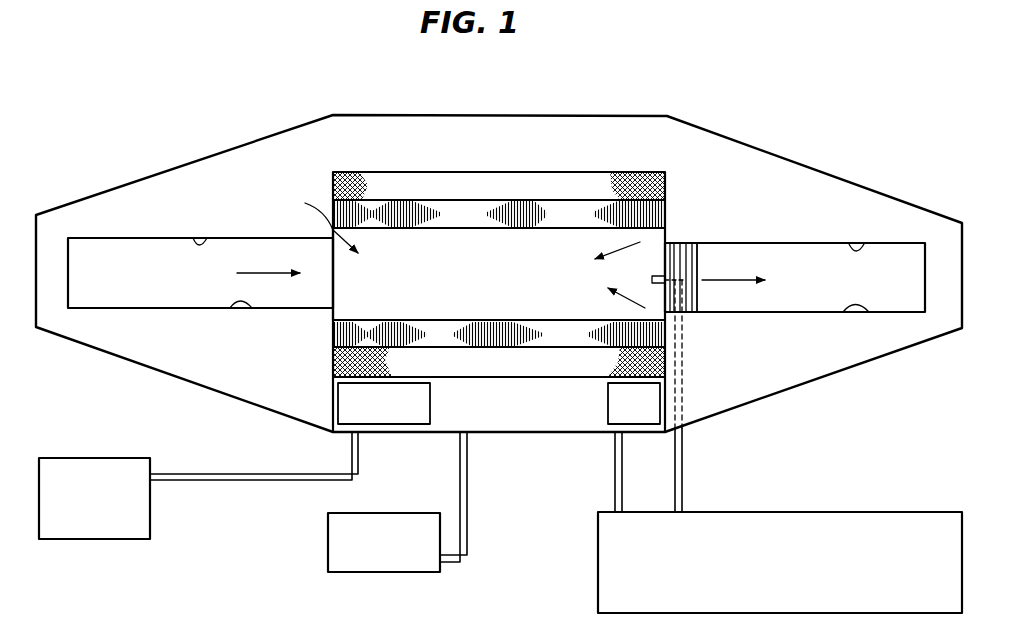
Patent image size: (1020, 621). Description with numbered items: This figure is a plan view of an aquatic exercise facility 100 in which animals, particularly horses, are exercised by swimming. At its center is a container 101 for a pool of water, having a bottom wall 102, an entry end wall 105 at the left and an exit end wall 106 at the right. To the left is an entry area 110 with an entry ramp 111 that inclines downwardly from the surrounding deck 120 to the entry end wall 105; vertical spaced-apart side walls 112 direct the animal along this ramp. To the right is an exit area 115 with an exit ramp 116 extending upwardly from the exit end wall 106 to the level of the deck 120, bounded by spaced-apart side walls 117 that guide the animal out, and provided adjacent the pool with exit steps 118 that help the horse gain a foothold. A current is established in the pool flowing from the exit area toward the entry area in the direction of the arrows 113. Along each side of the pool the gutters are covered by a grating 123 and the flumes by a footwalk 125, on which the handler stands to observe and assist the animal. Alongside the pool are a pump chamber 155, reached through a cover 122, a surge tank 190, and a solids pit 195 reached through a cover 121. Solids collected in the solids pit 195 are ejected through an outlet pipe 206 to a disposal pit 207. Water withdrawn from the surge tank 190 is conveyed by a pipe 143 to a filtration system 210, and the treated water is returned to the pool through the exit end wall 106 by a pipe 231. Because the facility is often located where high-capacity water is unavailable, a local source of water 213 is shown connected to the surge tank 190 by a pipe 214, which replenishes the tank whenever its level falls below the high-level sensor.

The aquatic exercise facility 100 is at (285, 56).
The container 101 is at (319, 217).
The bottom wall 102 is at (548, 278).
The entry end wall 105 is at (337, 282).
The exit end wall 106 is at (668, 247).
The entry area 110 is at (170, 250).
The entry ramp 111 is at (218, 294).
The side walls 112 is at (208, 239).
The arrows 113 is at (626, 247).
The exit area 115 is at (763, 258).
The exit ramp 116 is at (908, 296).
The side walls 117 is at (864, 245).
The exit steps 118 is at (701, 261).
The deck 120 is at (710, 143).
The cover 121 is at (392, 410).
The cover 122 is at (638, 412).
The grating 123 is at (437, 222).
The footwalk 125 is at (427, 182).
The pipe 143 is at (614, 478).
The pump chamber 155 is at (604, 414).
The surge tank 190 is at (525, 424).
The solids pit 195 is at (333, 412).
The outlet pipe 206 is at (268, 481).
The disposal pit 207 is at (152, 511).
The filtration system 210 is at (805, 512).
The source of water 213 is at (326, 538).
The pipe 214 is at (468, 503).
The pipe 231 is at (686, 248).